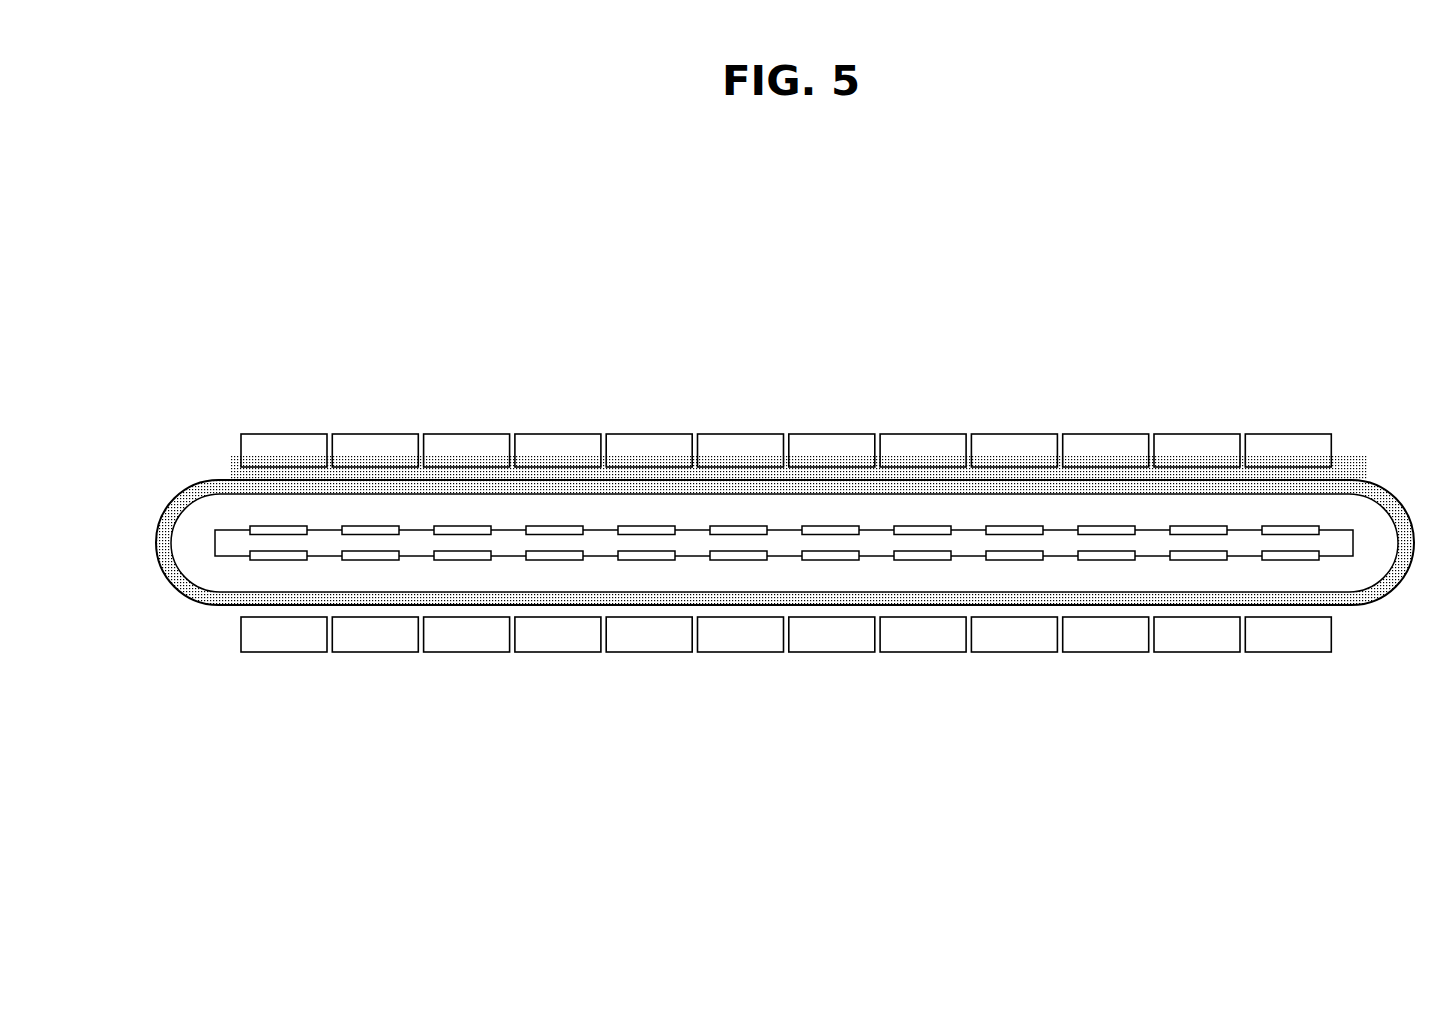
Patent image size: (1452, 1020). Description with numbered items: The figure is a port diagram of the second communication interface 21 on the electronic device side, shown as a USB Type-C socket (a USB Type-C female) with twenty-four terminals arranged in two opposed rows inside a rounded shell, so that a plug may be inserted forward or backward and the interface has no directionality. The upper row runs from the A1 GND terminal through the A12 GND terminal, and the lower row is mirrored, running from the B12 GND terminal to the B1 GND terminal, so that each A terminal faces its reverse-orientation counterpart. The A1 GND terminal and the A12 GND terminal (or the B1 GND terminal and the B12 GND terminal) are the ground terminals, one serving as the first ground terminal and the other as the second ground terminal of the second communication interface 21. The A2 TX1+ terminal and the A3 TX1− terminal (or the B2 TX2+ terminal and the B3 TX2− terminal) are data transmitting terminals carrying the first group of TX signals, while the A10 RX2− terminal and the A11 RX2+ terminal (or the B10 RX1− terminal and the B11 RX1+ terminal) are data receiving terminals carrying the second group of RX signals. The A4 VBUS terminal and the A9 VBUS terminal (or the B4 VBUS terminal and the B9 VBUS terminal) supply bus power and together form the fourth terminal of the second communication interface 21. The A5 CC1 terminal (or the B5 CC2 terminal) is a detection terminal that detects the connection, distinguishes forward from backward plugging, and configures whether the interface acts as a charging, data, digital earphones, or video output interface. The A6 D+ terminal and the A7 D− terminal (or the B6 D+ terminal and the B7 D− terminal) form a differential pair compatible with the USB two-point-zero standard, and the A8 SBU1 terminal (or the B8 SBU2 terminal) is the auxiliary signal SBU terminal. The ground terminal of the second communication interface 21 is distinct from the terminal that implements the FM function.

The second communication interface 21 is at (1351, 372).
The A1 GND terminal A1 is at (284, 437).
The A2 TX1+ terminal A2 is at (375, 437).
The A3 TX1− terminal A3 is at (467, 437).
The A4 VBUS terminal A4 is at (558, 437).
The A5 CC1 terminal A5 is at (649, 437).
The A6 D+ terminal A6 is at (741, 437).
The A7 D− terminal A7 is at (832, 437).
The A8 SBU1 terminal A8 is at (923, 437).
The A9 VBUS terminal A9 is at (1014, 437).
The A10 RX2− terminal A10 is at (1106, 437).
The A11 RX2+ terminal A11 is at (1197, 437).
The A12 GND terminal A12 is at (1288, 437).
The B1 GND terminal B1 is at (1288, 650).
The B2 TX2+ terminal B2 is at (1197, 650).
The B3 TX2− terminal B3 is at (1106, 650).
The B4 VBUS terminal B4 is at (1014, 650).
The B5 CC2 terminal B5 is at (923, 650).
The B6 D+ terminal B6 is at (832, 650).
The B7 D− terminal B7 is at (741, 650).
The B8 SBU2 terminal B8 is at (649, 650).
The B9 VBUS terminal B9 is at (558, 650).
The B10 RX1− terminal B10 is at (467, 650).
The B11 RX1+ terminal B11 is at (375, 650).
The B12 GND terminal B12 is at (284, 650).